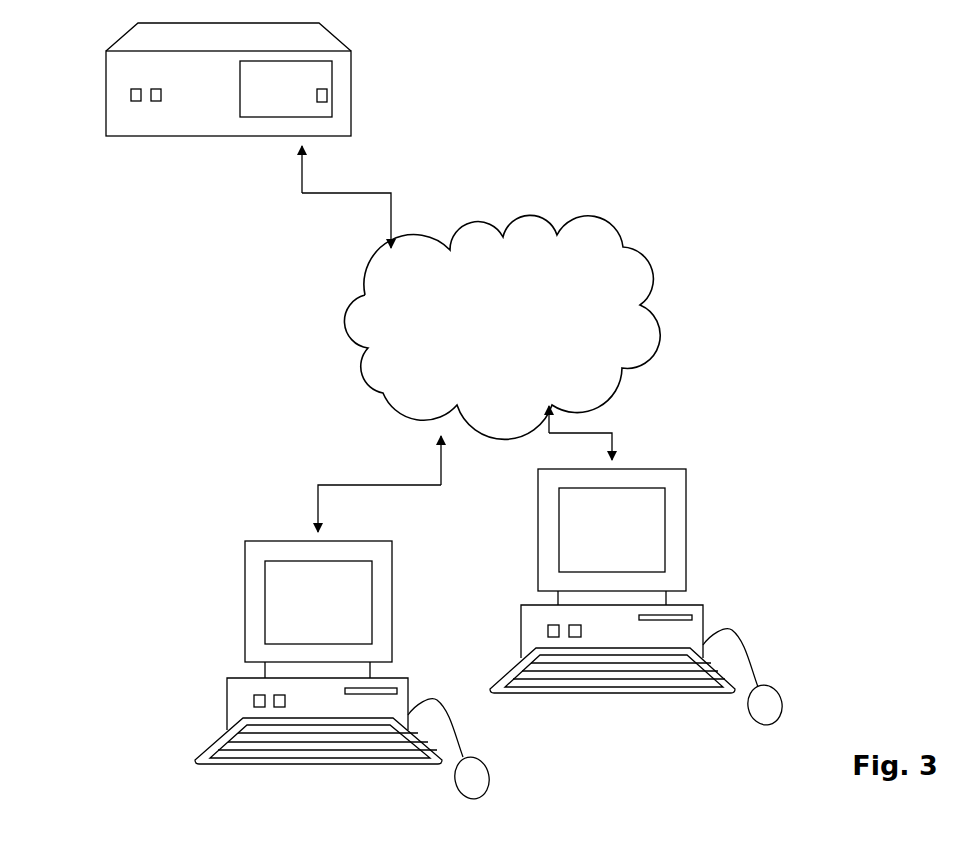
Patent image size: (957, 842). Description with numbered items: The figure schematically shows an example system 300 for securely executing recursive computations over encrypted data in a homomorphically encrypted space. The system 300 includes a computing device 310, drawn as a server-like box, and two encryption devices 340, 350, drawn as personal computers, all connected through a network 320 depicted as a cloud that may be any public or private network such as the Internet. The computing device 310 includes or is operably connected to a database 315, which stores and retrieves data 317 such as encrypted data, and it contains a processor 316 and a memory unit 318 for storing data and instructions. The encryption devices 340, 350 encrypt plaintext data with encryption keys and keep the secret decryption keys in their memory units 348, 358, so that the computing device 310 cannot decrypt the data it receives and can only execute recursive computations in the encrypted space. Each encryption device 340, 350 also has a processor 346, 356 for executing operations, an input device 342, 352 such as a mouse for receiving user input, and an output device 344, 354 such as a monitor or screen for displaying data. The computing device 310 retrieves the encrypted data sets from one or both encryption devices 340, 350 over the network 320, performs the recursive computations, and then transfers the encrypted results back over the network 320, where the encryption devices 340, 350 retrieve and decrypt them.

The system 300 is at (733, 112).
The computing device 310 is at (106, 80).
The database 315 is at (252, 95).
The processor 316 is at (136, 101).
The data 317 is at (322, 102).
The memory unit 318 is at (156, 89).
The network 320 is at (472, 396).
The encryption device 340 is at (285, 541).
The input device 342 is at (482, 760).
The output device 344 is at (314, 602).
The processor 346 is at (254, 701).
The memory unit 348 is at (280, 695).
The encryption device 350 is at (683, 469).
The input device 352 is at (777, 690).
The output device 354 is at (608, 531).
The processor 356 is at (548, 631).
The memory unit 358 is at (575, 625).